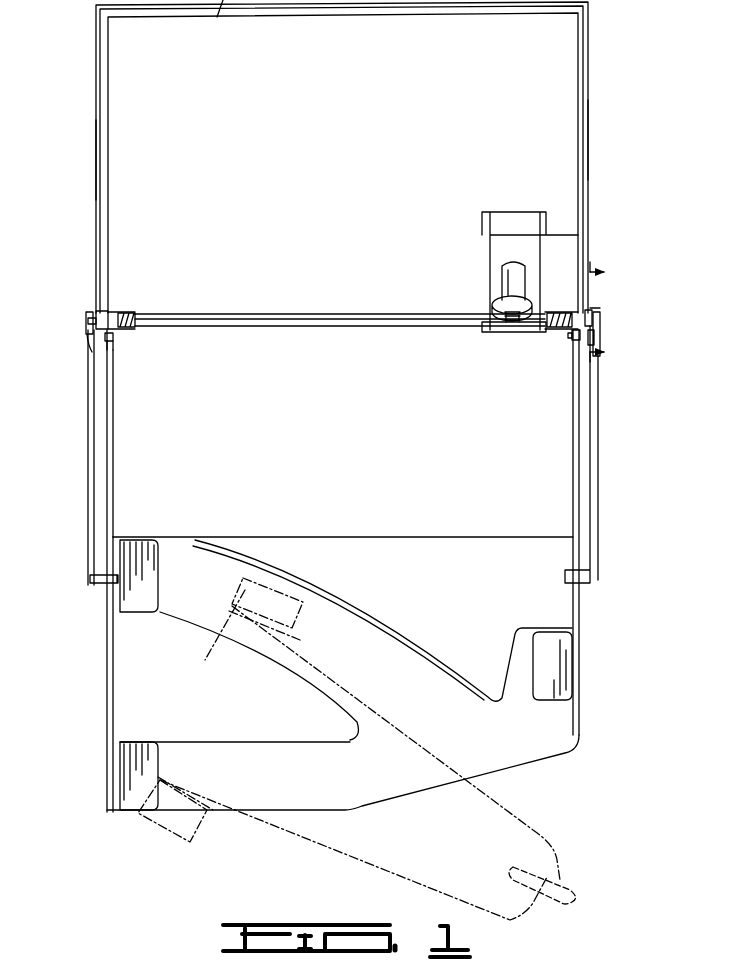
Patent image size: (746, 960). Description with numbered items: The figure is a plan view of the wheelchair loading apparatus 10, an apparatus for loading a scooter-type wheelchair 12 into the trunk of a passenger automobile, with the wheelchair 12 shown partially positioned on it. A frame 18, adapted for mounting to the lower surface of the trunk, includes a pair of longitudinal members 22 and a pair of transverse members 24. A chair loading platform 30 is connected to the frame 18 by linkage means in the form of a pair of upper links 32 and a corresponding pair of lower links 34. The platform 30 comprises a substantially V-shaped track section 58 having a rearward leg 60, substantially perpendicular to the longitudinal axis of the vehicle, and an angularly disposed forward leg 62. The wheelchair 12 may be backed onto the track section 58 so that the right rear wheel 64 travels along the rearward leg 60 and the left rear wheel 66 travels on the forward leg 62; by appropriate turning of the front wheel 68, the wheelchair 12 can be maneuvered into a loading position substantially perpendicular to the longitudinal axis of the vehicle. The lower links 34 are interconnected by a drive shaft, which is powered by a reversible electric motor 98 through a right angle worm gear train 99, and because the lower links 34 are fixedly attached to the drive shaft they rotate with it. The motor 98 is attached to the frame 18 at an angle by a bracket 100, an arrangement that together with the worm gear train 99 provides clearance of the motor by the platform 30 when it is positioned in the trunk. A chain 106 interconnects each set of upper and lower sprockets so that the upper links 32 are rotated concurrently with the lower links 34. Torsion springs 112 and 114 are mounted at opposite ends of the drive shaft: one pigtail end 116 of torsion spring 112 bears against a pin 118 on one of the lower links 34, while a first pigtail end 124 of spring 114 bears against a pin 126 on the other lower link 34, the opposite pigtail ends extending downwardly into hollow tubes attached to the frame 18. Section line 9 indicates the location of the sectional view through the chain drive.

The section line 9- 9 is at (608, 313).
The wheelchair loading apparatus 10 is at (628, 235).
The scooter-type wheelchair 12 is at (548, 830).
The frame 18 is at (576, 90).
The longitudinal members 22 is at (105, 143).
The transverse members 24 is at (146, 317).
The chair loading platform 30 is at (398, 636).
The upper links 32 is at (90, 447).
The lower links 34 is at (114, 450).
The track section 58 is at (410, 760).
The rearward leg 60 is at (266, 795).
The forward leg 62 is at (280, 568).
The right rear wheel 64 is at (168, 842).
The left rear wheel 66 is at (312, 586).
The front wheel 68 is at (566, 880).
The reversible electric motor 98 is at (514, 268).
The right angle worm gear train 99 is at (506, 318).
The bracket 100 is at (533, 250).
The chain 106 is at (93, 345).
The torsion spring 112 is at (118, 316).
The torsion spring 114 is at (562, 324).
The pigtail end 116 is at (111, 348).
The pin 118 is at (118, 338).
The first pigtail end 124 is at (574, 341).
The pin 126 is at (568, 336).